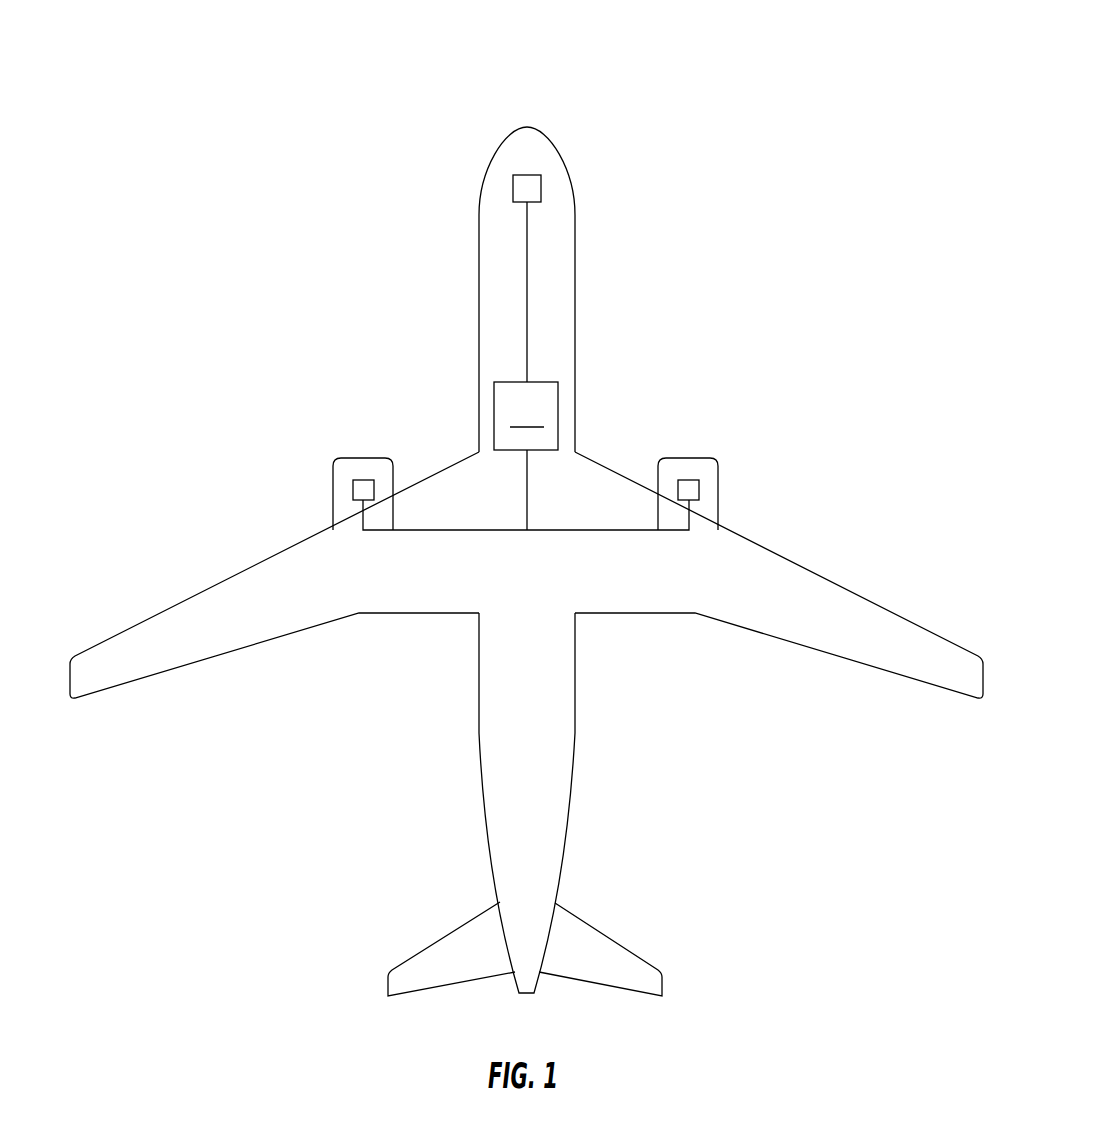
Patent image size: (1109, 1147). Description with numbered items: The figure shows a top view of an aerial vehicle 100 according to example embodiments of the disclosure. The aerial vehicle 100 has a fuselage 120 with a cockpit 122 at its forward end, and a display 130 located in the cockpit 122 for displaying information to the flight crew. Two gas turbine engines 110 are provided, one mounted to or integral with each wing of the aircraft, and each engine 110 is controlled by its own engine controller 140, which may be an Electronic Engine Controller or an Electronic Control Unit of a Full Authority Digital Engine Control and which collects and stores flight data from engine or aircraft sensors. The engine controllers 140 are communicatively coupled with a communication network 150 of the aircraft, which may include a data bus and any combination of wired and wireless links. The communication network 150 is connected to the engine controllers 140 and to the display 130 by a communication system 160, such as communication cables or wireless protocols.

The aerial vehicle 100 is at (580, 79).
The gas turbine engine 110 is at (368, 462).
The fuselage 120 is at (585, 273).
The cockpit 122 is at (578, 180).
The display 130 is at (513, 188).
The engine controller 140 is at (353, 490).
The communication network 150 is at (526, 416).
The communication system 160 is at (525, 324).